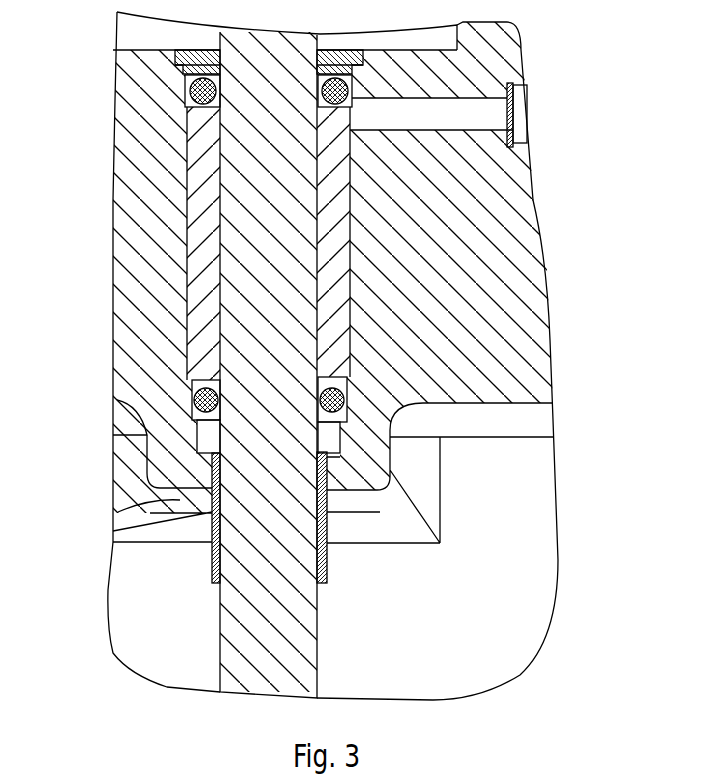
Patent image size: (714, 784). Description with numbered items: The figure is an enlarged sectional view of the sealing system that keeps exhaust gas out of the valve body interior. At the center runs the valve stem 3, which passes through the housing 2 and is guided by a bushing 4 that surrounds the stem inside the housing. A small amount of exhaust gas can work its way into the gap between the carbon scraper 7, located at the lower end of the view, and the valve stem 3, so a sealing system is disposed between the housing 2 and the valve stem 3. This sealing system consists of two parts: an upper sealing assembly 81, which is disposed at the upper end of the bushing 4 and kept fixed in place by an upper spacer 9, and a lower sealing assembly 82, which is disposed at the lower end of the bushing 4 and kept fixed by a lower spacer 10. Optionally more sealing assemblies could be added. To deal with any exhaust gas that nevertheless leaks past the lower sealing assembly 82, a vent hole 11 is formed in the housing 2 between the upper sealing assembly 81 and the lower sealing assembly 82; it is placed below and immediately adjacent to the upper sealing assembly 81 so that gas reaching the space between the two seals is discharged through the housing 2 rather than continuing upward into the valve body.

The housing 2 is at (483, 188).
The valve stem 3 is at (275, 242).
The bushing 4 is at (333, 312).
The carbon scraper 7 is at (212, 556).
The upper spacer 9 is at (208, 68).
The lower spacer 10 is at (195, 424).
The vent hole 11 is at (433, 108).
The upper sealing assembly 81 is at (183, 95).
The lower sealing assembly 82 is at (192, 397).